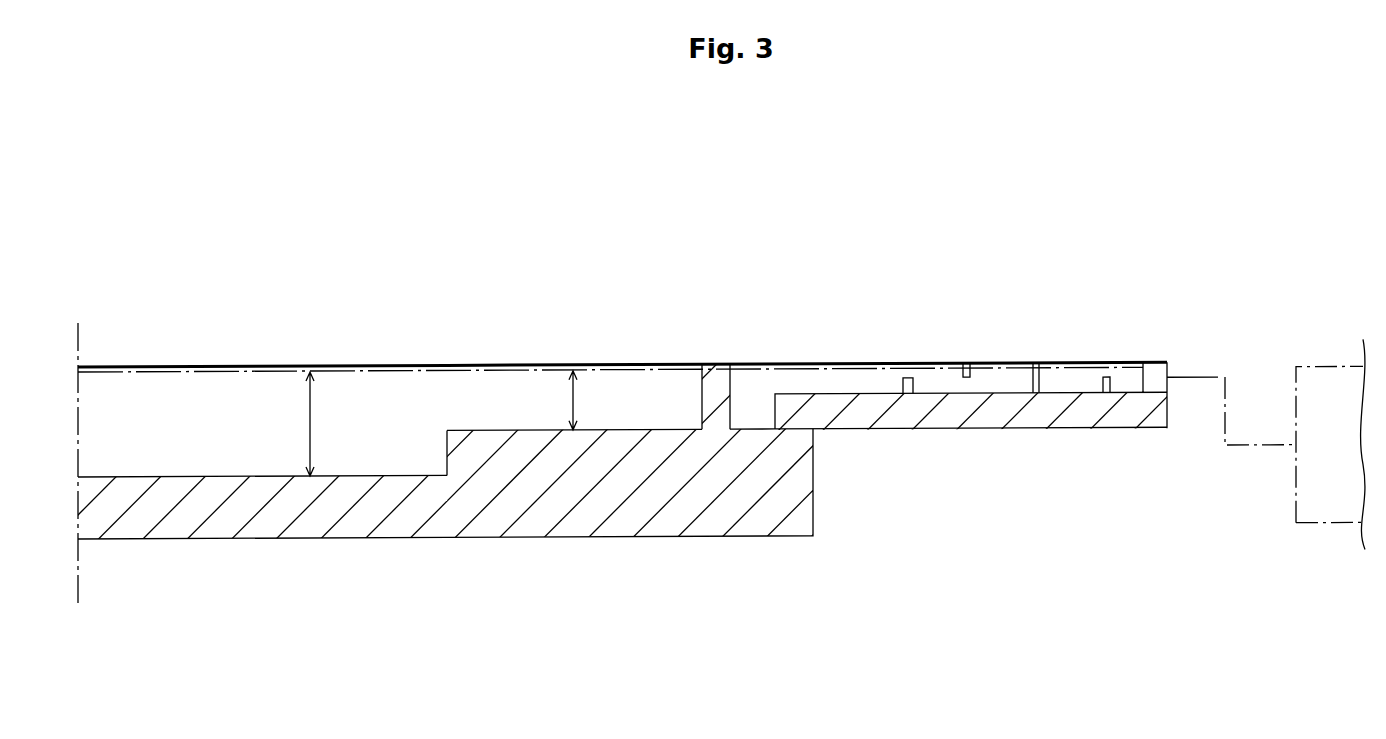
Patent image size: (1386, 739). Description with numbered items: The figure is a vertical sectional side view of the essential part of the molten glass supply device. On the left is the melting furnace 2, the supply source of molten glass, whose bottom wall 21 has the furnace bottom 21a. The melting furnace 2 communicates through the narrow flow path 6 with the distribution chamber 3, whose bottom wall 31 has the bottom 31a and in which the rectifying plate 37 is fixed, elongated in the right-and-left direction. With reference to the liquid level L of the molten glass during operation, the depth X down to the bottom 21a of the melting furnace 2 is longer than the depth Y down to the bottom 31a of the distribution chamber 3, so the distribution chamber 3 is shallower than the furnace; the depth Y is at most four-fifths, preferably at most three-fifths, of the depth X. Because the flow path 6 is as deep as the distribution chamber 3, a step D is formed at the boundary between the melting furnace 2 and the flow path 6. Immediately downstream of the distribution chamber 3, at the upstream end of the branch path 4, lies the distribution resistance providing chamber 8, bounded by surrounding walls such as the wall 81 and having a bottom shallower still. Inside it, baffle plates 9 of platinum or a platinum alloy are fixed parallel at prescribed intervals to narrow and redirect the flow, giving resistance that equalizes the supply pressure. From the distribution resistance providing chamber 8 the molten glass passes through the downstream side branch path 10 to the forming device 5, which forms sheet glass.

The melting furnace 2 is at (197, 360).
The flow path 6 is at (513, 360).
The distribution chamber 3 is at (675, 360).
The rectifying plate 37 is at (713, 380).
The distribution resistance providing chamber 8 is at (937, 360).
The surrounding wall 81 is at (982, 420).
The baffle plate 9 is at (903, 384).
The branch path 4 is at (1166, 360).
The downstream side branch path 10 is at (1228, 403).
The forming device 5 is at (1335, 372).
The bottom wall of melting furnace 21 is at (260, 527).
The bottom of melting furnace 21a is at (213, 477).
The bottom wall 31 is at (701, 523).
The bottom of distribution chamber 31a is at (652, 432).
The liquid level L is at (155, 376).
The depth X is at (319, 424).
The depth Y is at (582, 400).
The step D is at (447, 446).